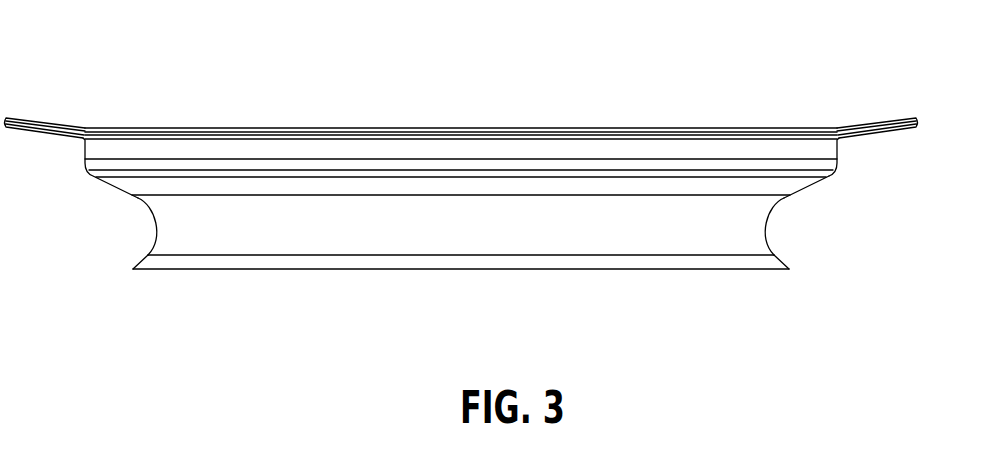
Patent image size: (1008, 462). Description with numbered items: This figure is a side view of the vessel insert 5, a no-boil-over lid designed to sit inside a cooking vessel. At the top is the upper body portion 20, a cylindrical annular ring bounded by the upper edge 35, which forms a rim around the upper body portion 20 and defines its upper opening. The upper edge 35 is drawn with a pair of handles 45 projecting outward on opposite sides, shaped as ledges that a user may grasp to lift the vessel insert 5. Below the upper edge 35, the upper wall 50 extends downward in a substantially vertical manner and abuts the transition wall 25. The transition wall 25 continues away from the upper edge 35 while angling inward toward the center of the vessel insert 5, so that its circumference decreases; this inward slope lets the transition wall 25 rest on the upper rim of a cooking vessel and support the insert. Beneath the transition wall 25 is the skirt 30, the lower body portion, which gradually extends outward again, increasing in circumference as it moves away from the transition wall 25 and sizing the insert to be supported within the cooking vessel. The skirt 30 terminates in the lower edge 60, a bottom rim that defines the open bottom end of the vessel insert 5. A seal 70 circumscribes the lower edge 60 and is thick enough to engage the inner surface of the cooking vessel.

The vessel insert 5 is at (461, 188).
The upper body portion 20 is at (107, 178).
The transition wall 25 is at (787, 197).
The skirt 30 is at (157, 225).
The upper edge 35 is at (115, 132).
The handles 45 is at (897, 118).
The upper wall 50 is at (838, 150).
The lower edge 60 is at (237, 271).
The seal 70 is at (137, 272).